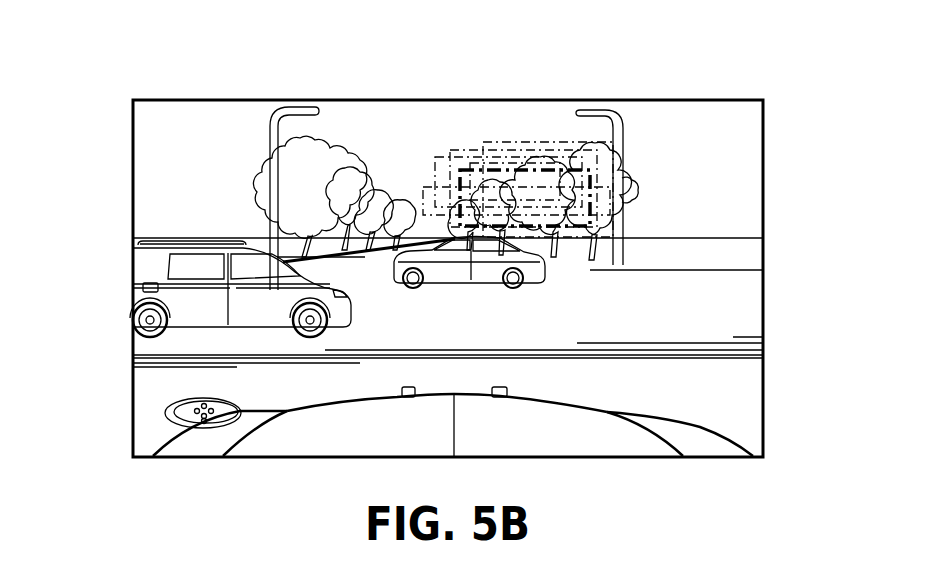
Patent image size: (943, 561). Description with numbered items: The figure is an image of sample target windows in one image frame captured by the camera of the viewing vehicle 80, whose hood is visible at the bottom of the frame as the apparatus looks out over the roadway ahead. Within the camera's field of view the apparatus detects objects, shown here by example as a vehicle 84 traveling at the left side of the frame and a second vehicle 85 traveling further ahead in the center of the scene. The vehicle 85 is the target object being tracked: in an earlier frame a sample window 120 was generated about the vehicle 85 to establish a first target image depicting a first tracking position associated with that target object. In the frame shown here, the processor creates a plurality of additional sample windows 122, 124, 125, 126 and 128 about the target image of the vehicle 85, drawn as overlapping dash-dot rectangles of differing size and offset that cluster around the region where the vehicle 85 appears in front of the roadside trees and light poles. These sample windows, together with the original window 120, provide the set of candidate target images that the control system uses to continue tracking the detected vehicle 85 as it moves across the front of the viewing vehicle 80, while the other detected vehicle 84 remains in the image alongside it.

The vehicle 80 is at (683, 435).
The vehicle 84 is at (147, 288).
The vehicle 85 is at (540, 256).
The sample window 120 is at (467, 150).
The sample window 122 is at (518, 162).
The sample window 124 is at (557, 143).
The sample window 125 is at (572, 150).
The sample window 126 is at (625, 222).
The sample window 128 is at (423, 193).